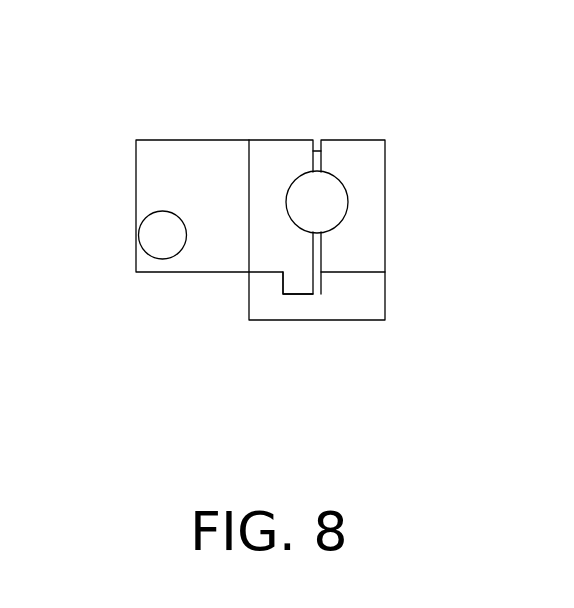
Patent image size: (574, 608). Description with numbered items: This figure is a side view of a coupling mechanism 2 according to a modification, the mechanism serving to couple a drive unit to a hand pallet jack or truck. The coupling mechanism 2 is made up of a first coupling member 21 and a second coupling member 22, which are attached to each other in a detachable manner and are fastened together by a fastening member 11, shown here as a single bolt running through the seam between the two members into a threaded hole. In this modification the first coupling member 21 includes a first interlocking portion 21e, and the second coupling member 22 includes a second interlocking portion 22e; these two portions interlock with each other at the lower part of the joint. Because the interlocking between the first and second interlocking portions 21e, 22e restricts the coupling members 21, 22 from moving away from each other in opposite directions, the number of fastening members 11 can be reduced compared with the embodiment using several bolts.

The coupling mechanism 2 is at (249, 218).
The fastening member 11 is at (317, 140).
The first coupling member 21 is at (249, 186).
The second coupling member 22 is at (238, 237).
The first interlocking portion 21e is at (262, 290).
The second interlocking portion 22e is at (299, 283).